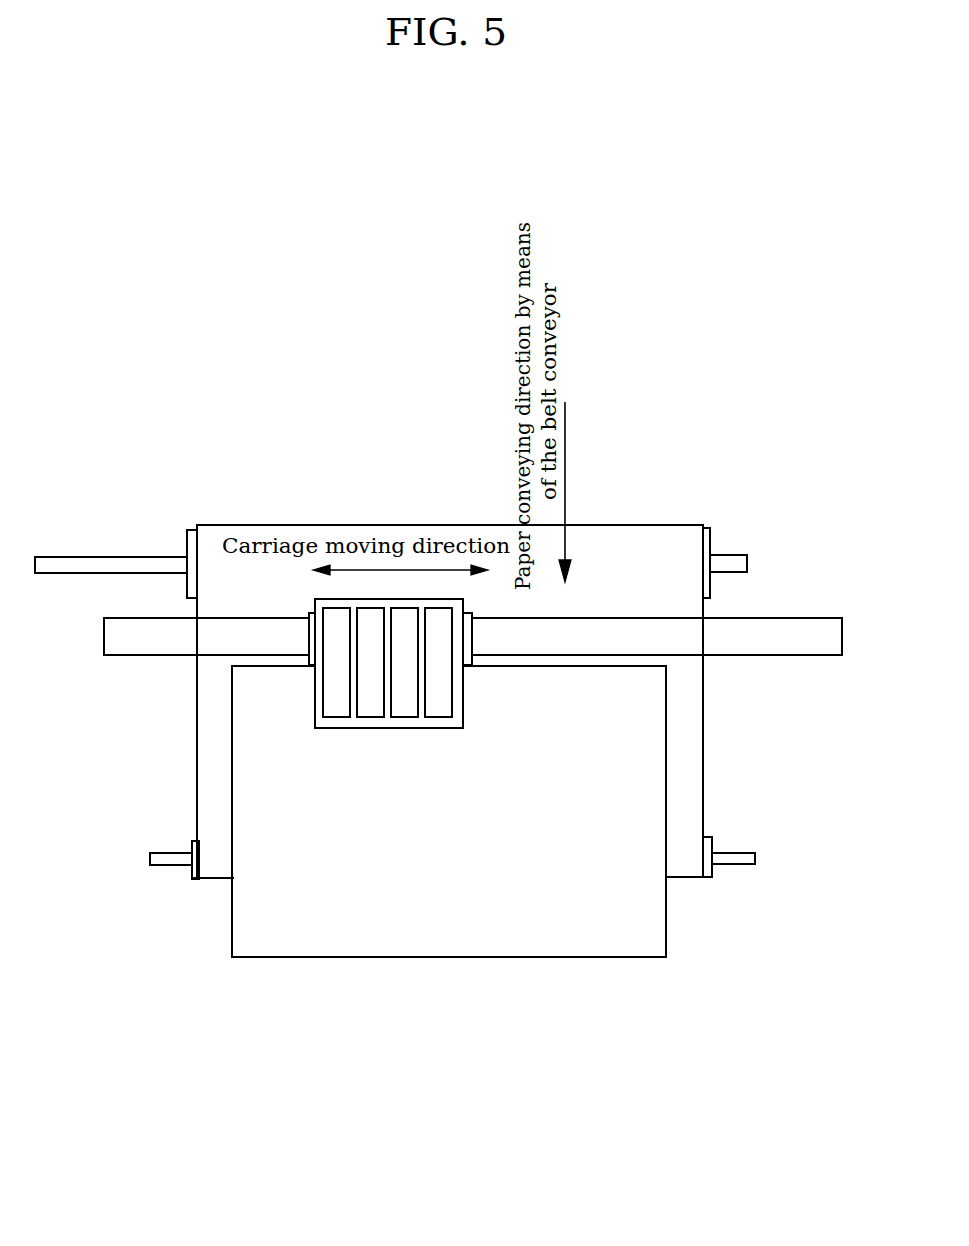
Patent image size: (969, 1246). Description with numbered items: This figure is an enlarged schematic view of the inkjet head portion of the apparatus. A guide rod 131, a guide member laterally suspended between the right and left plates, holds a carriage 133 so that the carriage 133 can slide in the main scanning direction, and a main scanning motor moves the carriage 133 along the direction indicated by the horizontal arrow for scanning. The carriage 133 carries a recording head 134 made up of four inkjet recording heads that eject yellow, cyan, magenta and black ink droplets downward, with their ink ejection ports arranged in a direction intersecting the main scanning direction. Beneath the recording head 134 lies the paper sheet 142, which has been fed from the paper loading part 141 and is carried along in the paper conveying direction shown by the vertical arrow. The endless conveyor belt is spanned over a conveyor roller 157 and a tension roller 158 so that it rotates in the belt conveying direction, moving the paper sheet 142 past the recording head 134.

The guide rod 131 is at (772, 632).
The carriage 133 is at (320, 717).
The recording head 134 is at (443, 708).
The paper loading part 141 is at (247, 525).
The paper sheet 142 is at (609, 932).
The conveyor roller 157 is at (190, 530).
The tension roller 158 is at (195, 880).